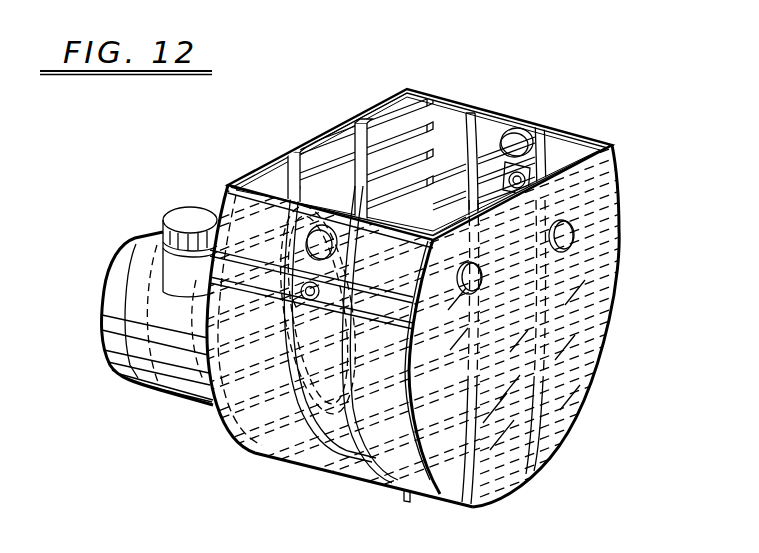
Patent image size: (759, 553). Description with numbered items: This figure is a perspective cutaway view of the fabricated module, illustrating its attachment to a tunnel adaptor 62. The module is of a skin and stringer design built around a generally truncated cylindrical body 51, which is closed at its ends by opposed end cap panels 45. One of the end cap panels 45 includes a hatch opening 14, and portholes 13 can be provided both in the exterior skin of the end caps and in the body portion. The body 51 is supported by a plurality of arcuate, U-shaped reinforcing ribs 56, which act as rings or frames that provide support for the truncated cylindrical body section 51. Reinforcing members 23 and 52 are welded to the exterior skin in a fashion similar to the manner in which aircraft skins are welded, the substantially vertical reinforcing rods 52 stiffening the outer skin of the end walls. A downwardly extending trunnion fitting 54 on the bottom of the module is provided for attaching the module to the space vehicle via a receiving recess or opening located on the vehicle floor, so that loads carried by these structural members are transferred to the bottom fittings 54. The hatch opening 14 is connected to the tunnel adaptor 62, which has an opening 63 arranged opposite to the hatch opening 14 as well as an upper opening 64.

The portholes 13 is at (576, 230).
The hatch opening 14 is at (248, 452).
The reinforcing member 23 is at (608, 250).
The end cap panels 45 is at (321, 131).
The body 51 is at (569, 135).
The reinforcing rods 52 is at (546, 383).
The trunnion fitting 54 is at (399, 509).
The arcuate reinforcing ribs 56 is at (387, 474).
The tunnel adaptor 62 is at (191, 399).
The opening 63 is at (124, 240).
The upper opening 64 is at (204, 203).